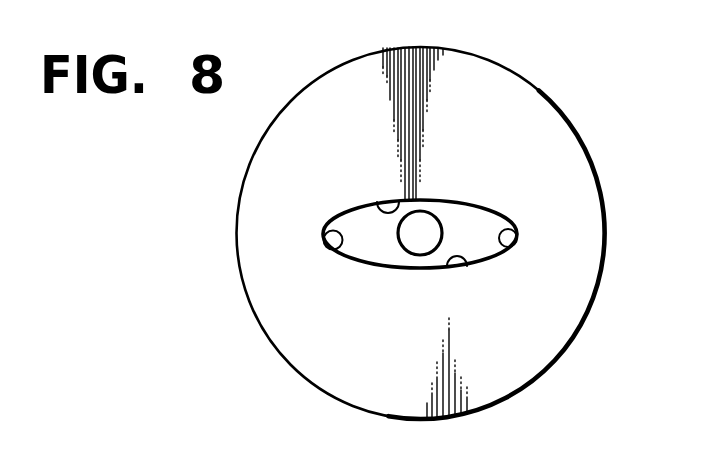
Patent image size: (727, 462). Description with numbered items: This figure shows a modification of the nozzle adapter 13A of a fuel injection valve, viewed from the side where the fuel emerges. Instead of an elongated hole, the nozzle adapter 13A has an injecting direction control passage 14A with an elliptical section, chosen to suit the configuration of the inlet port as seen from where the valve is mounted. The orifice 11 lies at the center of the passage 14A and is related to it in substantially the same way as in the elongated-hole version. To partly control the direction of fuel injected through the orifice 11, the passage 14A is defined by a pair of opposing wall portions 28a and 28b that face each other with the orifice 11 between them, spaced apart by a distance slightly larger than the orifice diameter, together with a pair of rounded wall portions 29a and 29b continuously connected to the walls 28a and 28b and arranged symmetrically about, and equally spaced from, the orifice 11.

The nozzle adapter 13A is at (507, 105).
The injecting direction control passage 14A is at (457, 218).
The orifice 11 is at (417, 240).
The opposing wall portion 28a is at (376, 200).
The opposing wall portion 28b is at (463, 257).
The rounded wall portion 29a is at (340, 252).
The rounded wall portion 29b is at (511, 247).